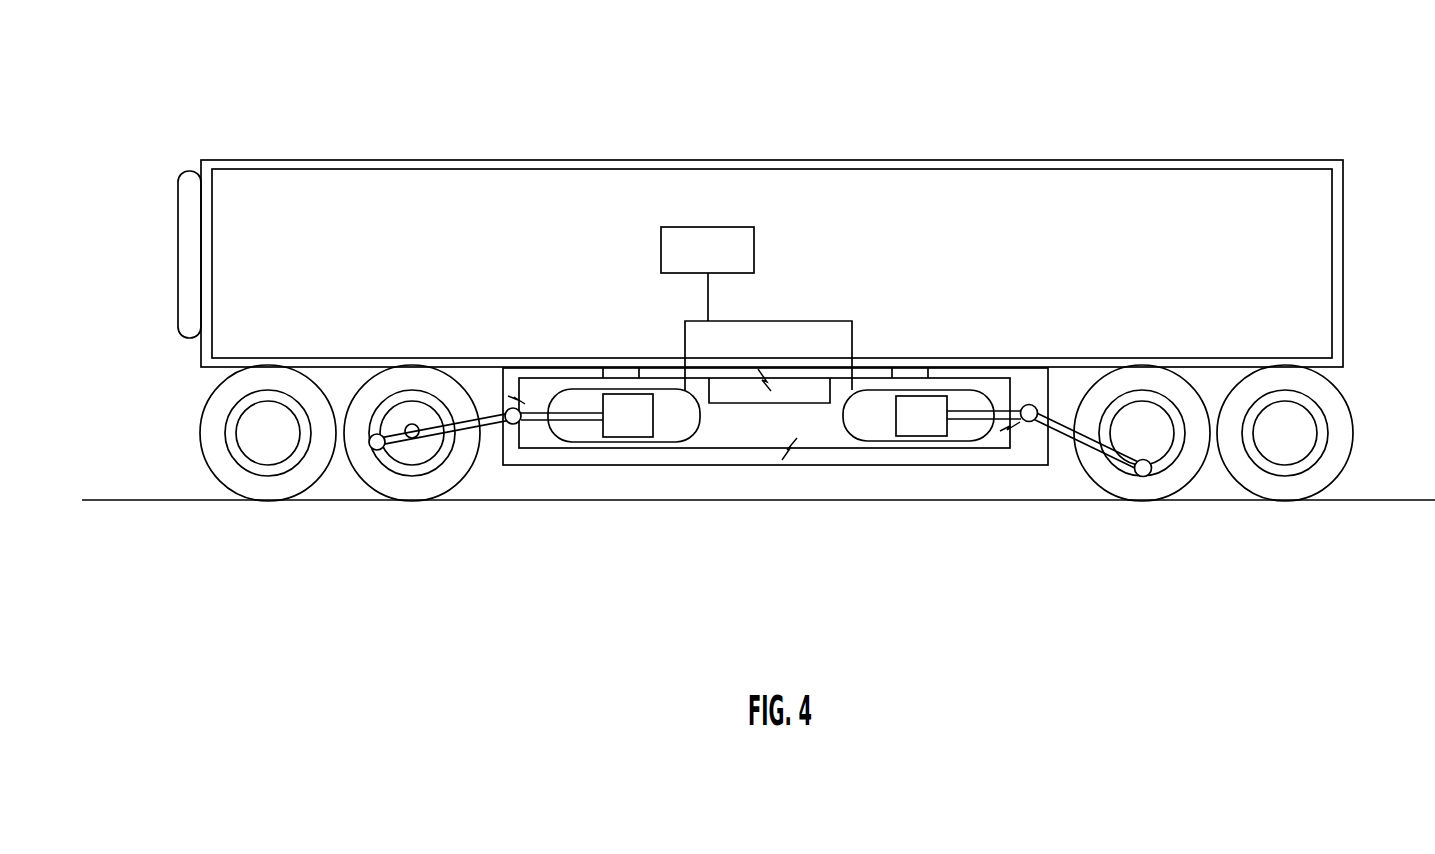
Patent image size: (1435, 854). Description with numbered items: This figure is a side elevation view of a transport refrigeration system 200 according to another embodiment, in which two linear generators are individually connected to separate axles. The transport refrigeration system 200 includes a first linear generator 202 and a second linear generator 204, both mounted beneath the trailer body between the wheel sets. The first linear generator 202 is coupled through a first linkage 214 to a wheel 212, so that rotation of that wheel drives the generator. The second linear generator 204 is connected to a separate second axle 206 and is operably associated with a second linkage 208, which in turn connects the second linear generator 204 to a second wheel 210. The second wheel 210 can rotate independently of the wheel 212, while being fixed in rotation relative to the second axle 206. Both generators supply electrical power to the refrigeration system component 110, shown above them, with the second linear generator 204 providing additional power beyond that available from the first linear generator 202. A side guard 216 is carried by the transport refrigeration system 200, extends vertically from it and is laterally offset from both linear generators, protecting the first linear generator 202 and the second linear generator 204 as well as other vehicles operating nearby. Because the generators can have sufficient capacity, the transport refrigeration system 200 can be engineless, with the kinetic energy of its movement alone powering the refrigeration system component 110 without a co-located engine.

The transport refrigeration system 200 is at (313, 625).
The refrigeration system component 110 is at (689, 265).
The first linear generator 202 is at (865, 403).
The second linear generator 204 is at (585, 430).
The second axle 206 is at (410, 427).
The second linkage 208 is at (533, 427).
The second wheel 210 is at (378, 485).
The wheel 212 is at (1163, 487).
The first linkage 214 is at (978, 403).
The side guard 216 is at (503, 390).